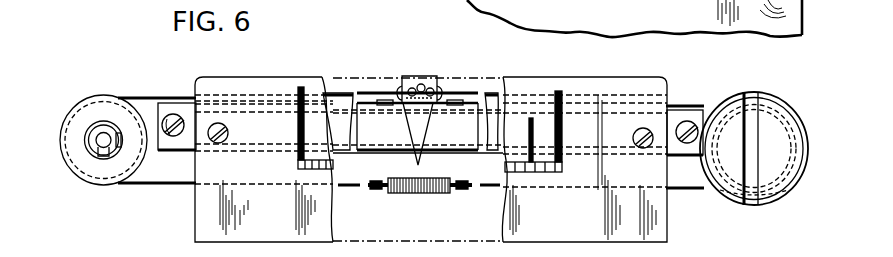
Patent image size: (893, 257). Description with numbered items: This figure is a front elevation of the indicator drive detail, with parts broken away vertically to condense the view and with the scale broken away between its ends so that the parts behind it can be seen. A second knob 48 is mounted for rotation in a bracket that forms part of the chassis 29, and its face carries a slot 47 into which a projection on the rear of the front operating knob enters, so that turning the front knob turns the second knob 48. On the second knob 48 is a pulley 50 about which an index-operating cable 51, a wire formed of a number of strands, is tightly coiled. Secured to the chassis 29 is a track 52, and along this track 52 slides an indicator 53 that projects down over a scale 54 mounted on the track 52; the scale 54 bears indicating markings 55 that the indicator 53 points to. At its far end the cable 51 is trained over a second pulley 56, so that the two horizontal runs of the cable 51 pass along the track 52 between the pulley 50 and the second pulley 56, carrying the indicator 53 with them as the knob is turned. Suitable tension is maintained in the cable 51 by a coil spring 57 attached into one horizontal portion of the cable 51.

The chassis 29 is at (188, 140).
The slot 47 is at (752, 143).
The second knob 48 is at (765, 123).
The pulley 50 is at (766, 194).
The index-operating cable 51 is at (163, 97).
The track 52 is at (343, 103).
The indicator 53 is at (428, 83).
The scale 54 is at (252, 88).
The indicating markings 55 is at (558, 92).
The second pulley 56 is at (77, 117).
The coil spring 57 is at (427, 193).